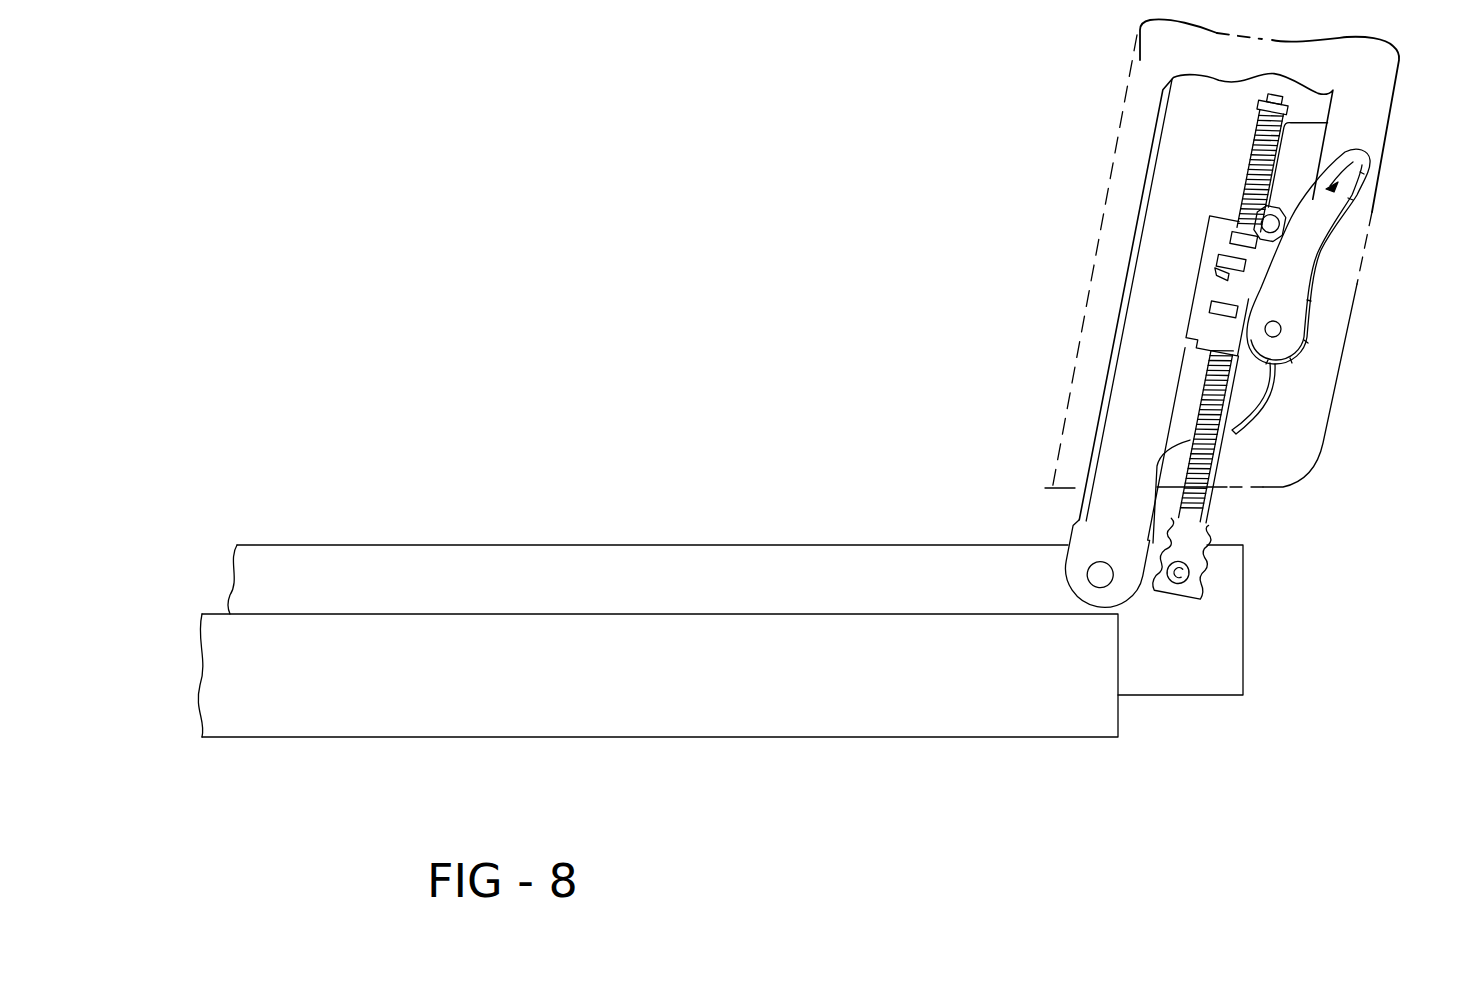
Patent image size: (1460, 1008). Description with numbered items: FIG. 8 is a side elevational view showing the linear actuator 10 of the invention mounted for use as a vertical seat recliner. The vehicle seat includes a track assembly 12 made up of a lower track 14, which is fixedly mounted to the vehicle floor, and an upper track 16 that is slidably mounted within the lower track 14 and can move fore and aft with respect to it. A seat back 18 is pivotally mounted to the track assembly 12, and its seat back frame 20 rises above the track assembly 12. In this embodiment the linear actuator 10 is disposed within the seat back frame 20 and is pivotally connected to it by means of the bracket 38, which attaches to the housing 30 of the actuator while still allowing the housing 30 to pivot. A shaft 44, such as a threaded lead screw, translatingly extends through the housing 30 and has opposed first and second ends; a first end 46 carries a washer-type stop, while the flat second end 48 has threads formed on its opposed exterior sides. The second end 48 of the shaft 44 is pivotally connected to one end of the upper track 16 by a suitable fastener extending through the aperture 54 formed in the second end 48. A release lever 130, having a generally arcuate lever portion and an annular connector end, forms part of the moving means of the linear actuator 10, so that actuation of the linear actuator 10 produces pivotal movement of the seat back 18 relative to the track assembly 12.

The linear actuator 10 is at (1325, 295).
The track assembly 12 is at (183, 603).
The lower track 14 is at (231, 723).
The upper track 16 is at (290, 568).
The seat back 18 is at (1083, 291).
The seat back frame 20 is at (1112, 375).
The housing 30 is at (1191, 302).
The bracket 38 is at (1308, 146).
The shaft 44 is at (1247, 178).
The first end 46 is at (1260, 116).
The second end 48 is at (1193, 533).
The aperture 54 is at (1187, 582).
The release lever 130 is at (1370, 162).